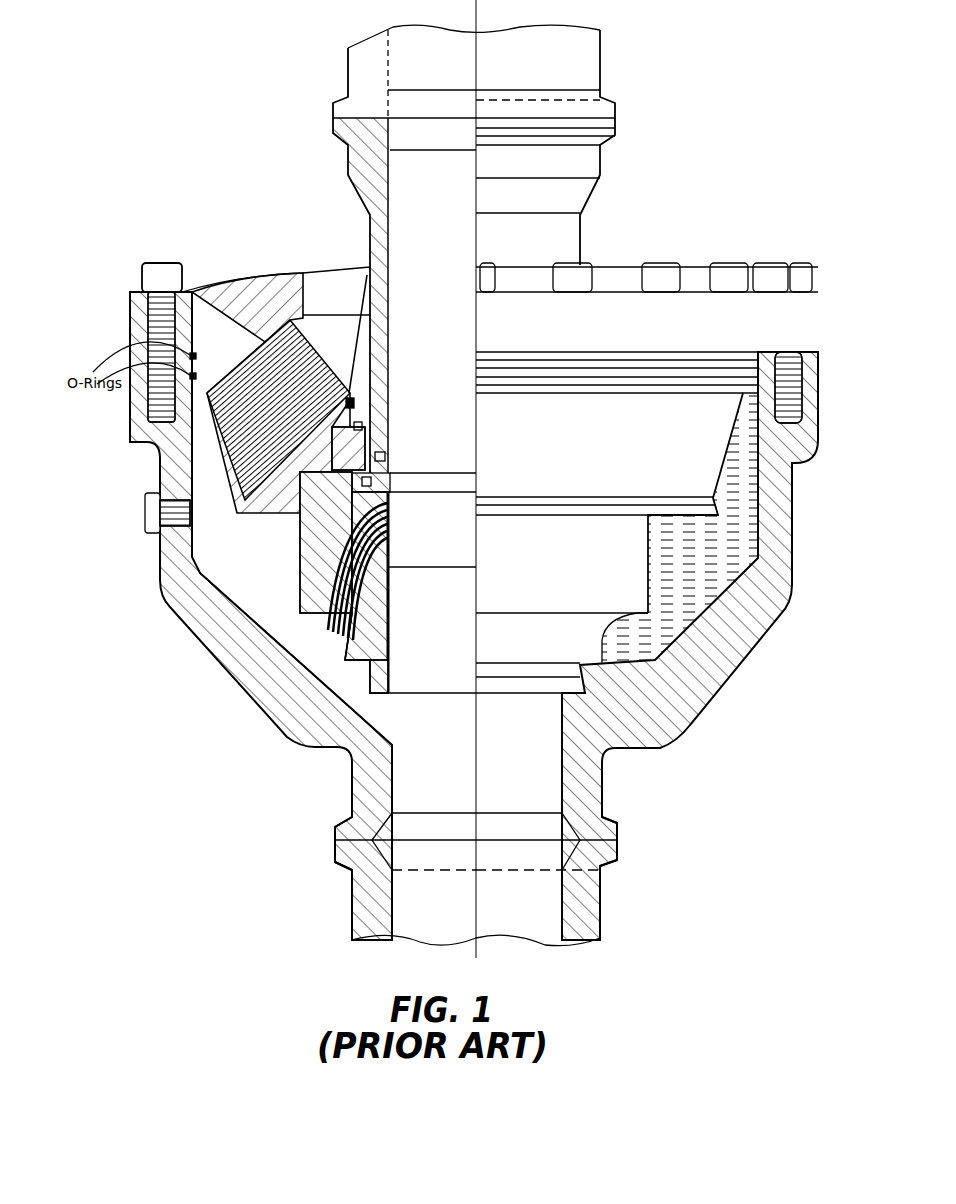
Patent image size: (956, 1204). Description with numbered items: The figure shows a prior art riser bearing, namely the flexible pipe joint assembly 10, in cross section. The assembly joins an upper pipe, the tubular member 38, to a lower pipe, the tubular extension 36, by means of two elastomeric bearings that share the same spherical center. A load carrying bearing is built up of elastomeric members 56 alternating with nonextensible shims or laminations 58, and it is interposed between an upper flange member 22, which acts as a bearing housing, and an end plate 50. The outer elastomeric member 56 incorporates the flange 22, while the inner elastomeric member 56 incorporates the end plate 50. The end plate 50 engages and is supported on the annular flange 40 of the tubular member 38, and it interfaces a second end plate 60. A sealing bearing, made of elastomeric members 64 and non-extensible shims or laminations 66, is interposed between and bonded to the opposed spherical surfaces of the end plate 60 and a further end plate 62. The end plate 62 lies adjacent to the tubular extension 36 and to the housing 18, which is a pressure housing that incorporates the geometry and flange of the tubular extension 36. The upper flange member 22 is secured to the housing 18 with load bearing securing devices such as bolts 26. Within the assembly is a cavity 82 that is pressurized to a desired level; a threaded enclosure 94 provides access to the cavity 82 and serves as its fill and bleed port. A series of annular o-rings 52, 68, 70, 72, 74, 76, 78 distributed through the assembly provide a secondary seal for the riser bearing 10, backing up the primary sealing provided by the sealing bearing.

The flexible pipe joint assembly 10 is at (248, 140).
The housing 18 is at (756, 660).
The upper flange member 22 is at (242, 331).
The bolts 26 is at (158, 263).
The tubular extension 36 is at (603, 798).
The tubular member 38 is at (590, 226).
The annular flange 40 is at (348, 448).
The end plate 50 is at (300, 476).
The annular o-ring 52 is at (356, 406).
The elastomeric members 56 is at (354, 363).
The nonextensible shims or laminations 58 is at (320, 342).
The end plate 60 is at (336, 521).
The end plate 62 is at (390, 633).
The elastomeric members 64 is at (394, 523).
The non-extensible shims or laminations 66 is at (318, 618).
The annular o-ring 68 is at (280, 515).
The annular o-ring 70 is at (362, 427).
The annular o-ring 72 is at (385, 456).
The annular o-ring 74 is at (372, 483).
The annular o-ring 76 is at (358, 660).
The annular o-ring 78 is at (390, 674).
The cavity 82 is at (243, 583).
The threaded enclosure 94 is at (148, 508).